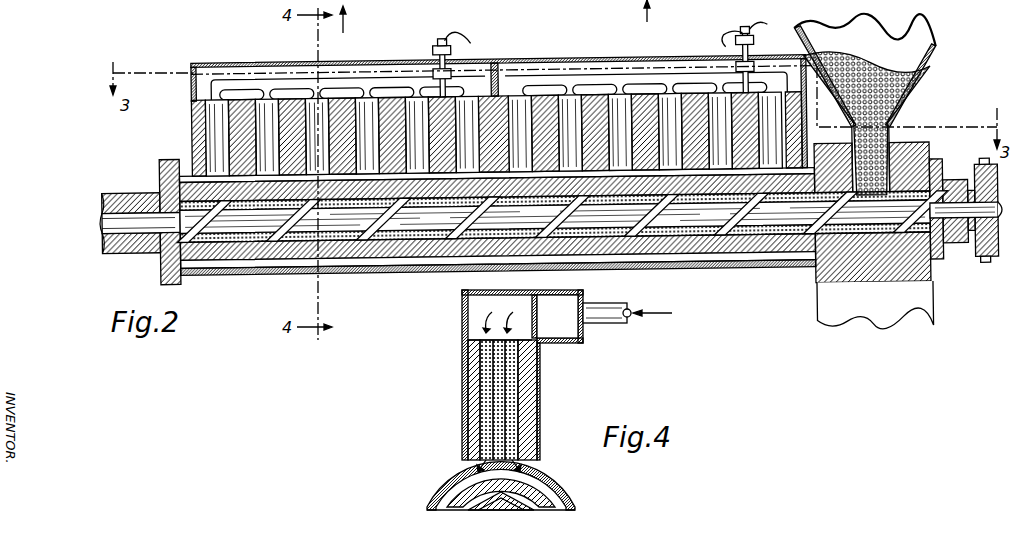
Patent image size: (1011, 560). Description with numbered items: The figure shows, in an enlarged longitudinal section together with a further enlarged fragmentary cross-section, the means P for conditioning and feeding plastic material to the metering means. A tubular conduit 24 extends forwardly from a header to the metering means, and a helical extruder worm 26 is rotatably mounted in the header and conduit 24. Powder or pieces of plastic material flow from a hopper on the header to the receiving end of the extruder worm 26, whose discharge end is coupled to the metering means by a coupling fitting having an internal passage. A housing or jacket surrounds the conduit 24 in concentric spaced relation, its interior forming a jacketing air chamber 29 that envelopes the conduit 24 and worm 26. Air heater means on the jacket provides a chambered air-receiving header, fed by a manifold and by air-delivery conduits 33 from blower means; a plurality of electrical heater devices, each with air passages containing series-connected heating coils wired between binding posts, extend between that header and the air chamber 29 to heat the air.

In FIG. 4, the tubular conduit 24 is at (533, 487).
In FIG. 4, the helical extruder worm 26 is at (548, 498).
In FIG. 2, the jacketing air chamber 29 is at (334, 262).
In FIG. 4, the jacketing air chamber 29 is at (447, 488).
In FIG. 4, the air-delivery conduits 33 is at (610, 307).
In FIG. 2, the means for conditioning and feeding the plastic material P is at (734, 268).